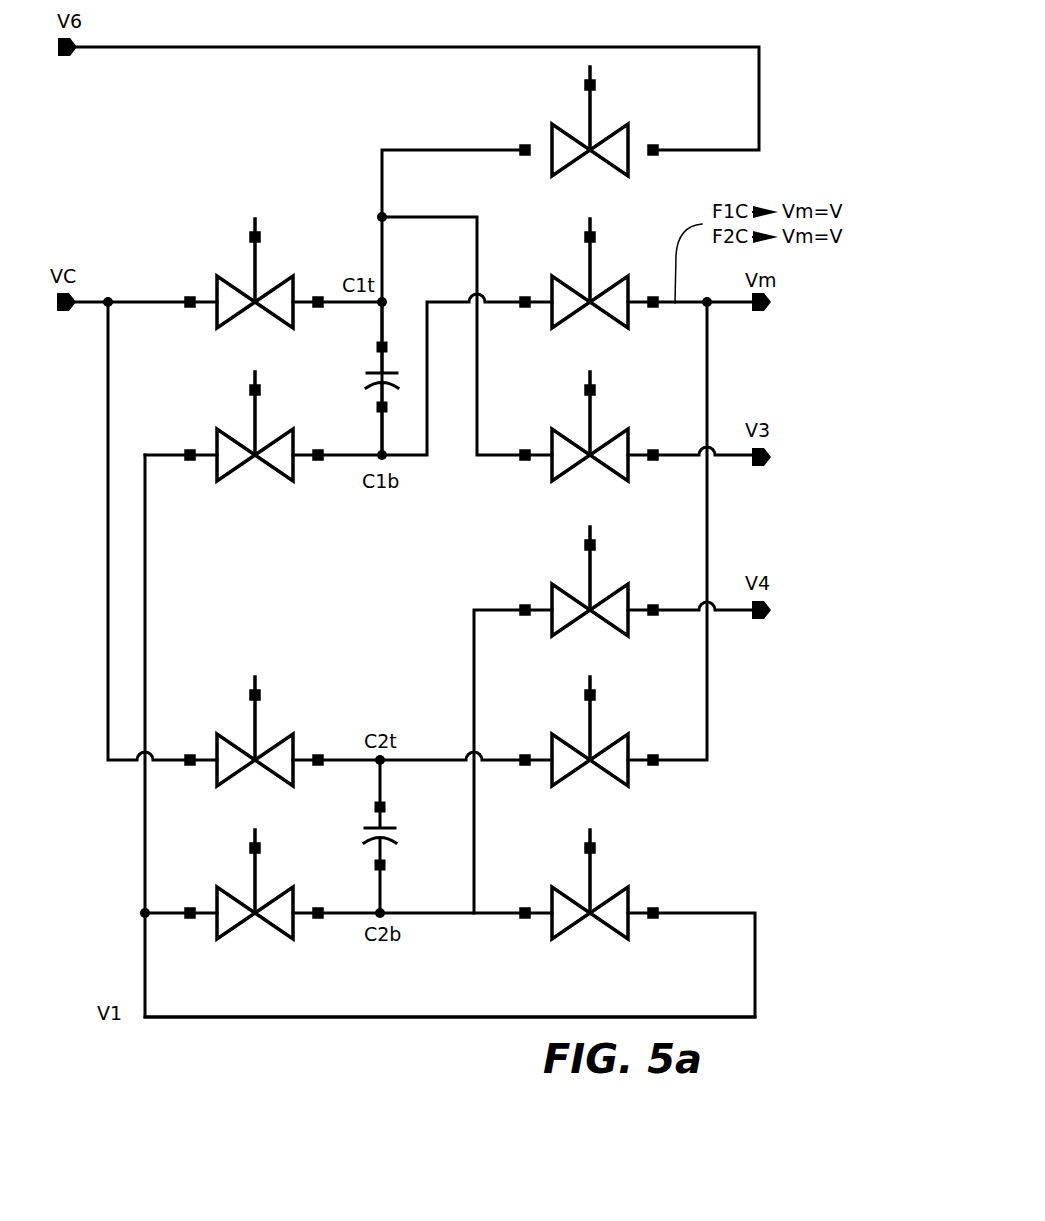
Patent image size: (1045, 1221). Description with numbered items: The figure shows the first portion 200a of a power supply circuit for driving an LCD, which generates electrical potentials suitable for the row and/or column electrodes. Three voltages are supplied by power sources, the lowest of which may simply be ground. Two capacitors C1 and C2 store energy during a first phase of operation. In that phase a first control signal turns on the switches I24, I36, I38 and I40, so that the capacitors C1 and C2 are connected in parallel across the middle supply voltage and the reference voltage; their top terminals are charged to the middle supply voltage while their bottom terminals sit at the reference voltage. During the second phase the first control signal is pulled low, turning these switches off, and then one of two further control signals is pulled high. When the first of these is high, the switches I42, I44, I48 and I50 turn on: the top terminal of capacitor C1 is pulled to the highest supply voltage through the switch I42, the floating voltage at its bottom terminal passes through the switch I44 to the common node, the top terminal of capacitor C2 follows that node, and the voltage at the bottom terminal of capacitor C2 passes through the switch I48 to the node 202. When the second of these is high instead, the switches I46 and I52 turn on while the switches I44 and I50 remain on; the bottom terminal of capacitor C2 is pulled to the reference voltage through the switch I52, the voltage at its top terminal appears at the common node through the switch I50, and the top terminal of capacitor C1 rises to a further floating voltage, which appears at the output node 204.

The switch I24 is at (254, 280).
The switch I36 is at (254, 433).
The switch I38 is at (254, 738).
The switch I40 is at (254, 891).
The switch I42 is at (589, 128).
The switch I44 is at (590, 280).
The switch I46 is at (589, 433).
The switch I48 is at (589, 588).
The switch I50 is at (590, 738).
The switch I52 is at (589, 891).
The capacitor C1 is at (365, 378).
The capacitor C2 is at (363, 836).
The output terminal V3 204 is at (755, 464).
The node 202 is at (755, 617).
The first portion 200a is at (305, 1040).